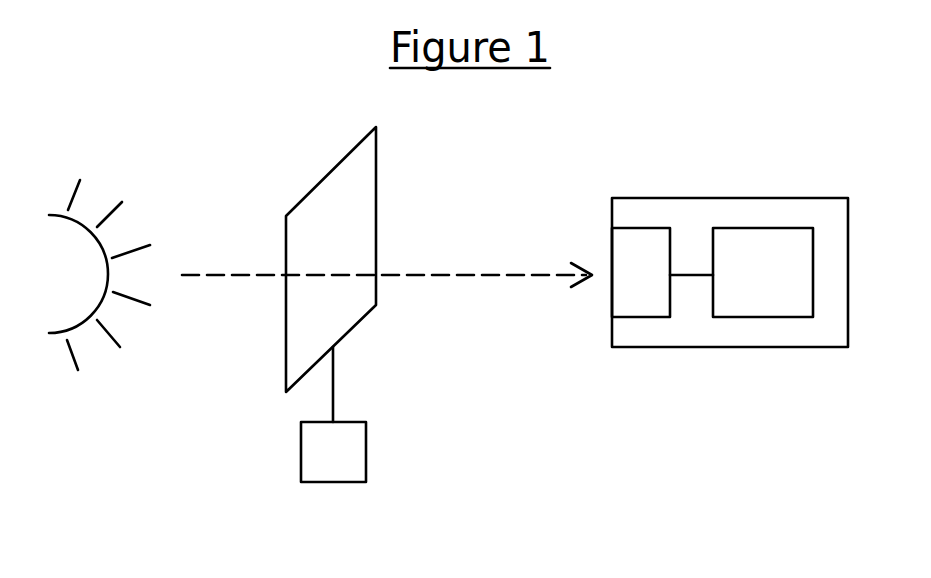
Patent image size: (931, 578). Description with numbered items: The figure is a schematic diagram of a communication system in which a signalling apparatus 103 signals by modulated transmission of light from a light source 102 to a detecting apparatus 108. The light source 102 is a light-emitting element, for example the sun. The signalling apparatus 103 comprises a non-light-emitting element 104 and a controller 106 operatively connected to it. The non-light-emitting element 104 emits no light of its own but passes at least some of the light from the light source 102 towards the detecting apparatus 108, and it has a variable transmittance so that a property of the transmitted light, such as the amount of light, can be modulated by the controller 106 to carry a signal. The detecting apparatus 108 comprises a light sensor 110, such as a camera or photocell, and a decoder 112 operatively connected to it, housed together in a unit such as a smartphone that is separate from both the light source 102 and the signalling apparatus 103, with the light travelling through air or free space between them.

The light source 102 is at (85, 285).
The signalling apparatus 103 is at (359, 339).
The non-light-emitting element 104 is at (376, 187).
The controller 106 is at (376, 437).
The detecting apparatus 108 is at (730, 276).
The light sensor 110 is at (647, 317).
The decoder 112 is at (777, 317).